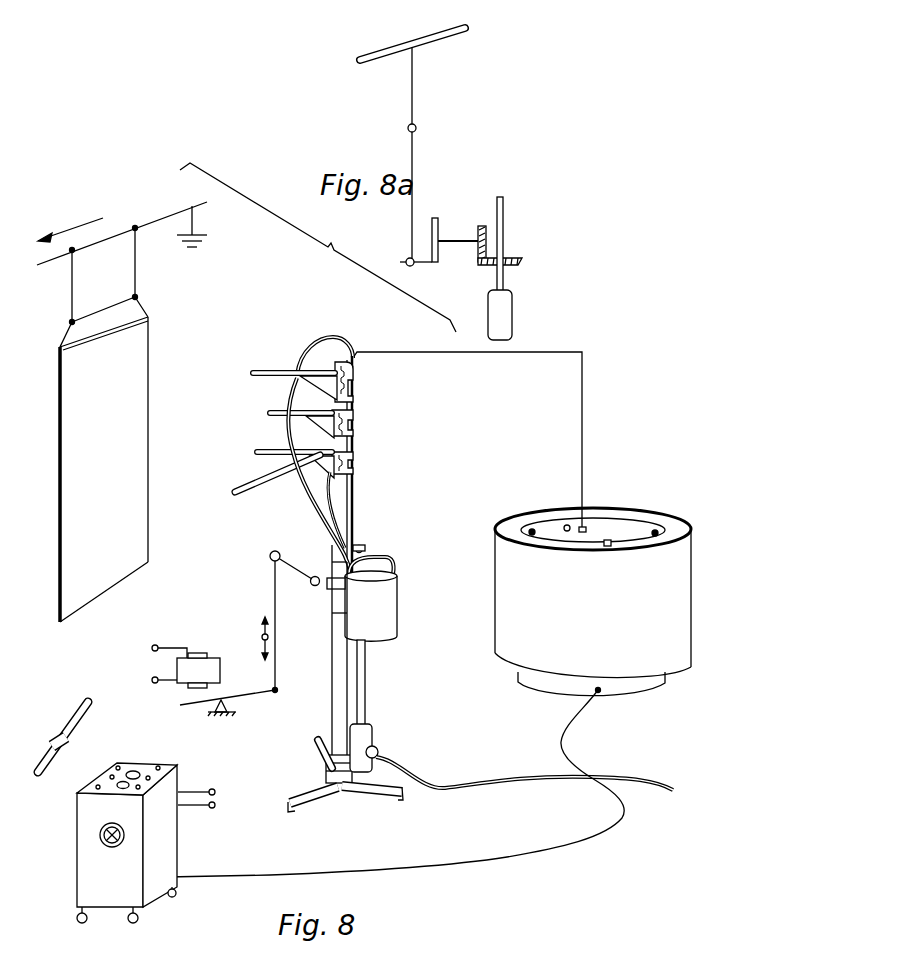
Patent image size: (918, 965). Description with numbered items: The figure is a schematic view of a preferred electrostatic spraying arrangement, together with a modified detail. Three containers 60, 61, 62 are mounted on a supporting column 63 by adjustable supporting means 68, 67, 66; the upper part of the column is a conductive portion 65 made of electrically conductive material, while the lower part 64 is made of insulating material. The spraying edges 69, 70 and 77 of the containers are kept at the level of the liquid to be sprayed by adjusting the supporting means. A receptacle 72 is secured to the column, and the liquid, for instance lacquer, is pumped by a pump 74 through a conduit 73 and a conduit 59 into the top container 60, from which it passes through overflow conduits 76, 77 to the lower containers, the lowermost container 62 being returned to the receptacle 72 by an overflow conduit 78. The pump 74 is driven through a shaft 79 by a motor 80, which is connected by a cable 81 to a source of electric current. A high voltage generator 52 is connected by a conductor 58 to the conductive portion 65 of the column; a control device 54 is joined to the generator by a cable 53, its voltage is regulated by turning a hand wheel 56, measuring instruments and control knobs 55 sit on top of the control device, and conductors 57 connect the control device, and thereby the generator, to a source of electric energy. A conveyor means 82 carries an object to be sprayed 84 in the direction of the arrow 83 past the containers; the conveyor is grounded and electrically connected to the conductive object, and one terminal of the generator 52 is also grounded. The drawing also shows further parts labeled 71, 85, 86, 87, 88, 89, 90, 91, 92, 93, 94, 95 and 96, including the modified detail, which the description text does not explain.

In FIG. 8, the high voltage generator 52 is at (503, 642).
In FIG. 8, the cable 53 is at (508, 857).
In FIG. 8, the control device 54 is at (178, 840).
In FIG. 8, the measuring instruments and control knobs 55 is at (142, 765).
In FIG. 8, the hand wheel 56 is at (100, 836).
In FIG. 8, the conductors 57 is at (215, 803).
In FIG. 8, the conductor 58 is at (584, 392).
In FIG. 8, the conduit 59 is at (335, 323).
In FIG. 8, the top container 60 is at (281, 372).
In FIG. 8, the container 61 is at (274, 414).
In FIG. 8, the container 62 is at (278, 461).
In FIG. 8, the supporting column 63 is at (355, 523).
In FIG. 8, the lower part of supporting column 64 is at (340, 684).
In FIG. 8, the conductive portion of supporting column 65 is at (357, 492).
In FIG. 8, the adjustable supporting means 66 is at (357, 467).
In FIG. 8, the adjustable supporting means 67 is at (357, 427).
In FIG. 8, the adjustable supporting means 68 is at (357, 386).
In FIG. 8, the spraying edge 69 is at (258, 372).
In FIG. 8, the spraying edge 70 is at (289, 417).
In FIG. 8, the wedge 71 is at (300, 450).
In FIG. 8, the receptacle 72 is at (390, 611).
In FIG. 8, the conduit 73 is at (386, 563).
In FIG. 8, the pump 74 is at (366, 547).
In FIG. 8, the overflow conduit 76 is at (292, 392).
In FIG. 8, the overflow conduit 77 is at (312, 428).
In FIG. 8, the overflow conduit 78 is at (308, 512).
In FIG. 8A, the shaft 79 is at (505, 220).
In FIG. 8, the shaft 79 is at (366, 687).
In FIG. 8A, the motor 80 is at (510, 314).
In FIG. 8, the motor 80 is at (373, 739).
In FIG. 8, the cable 81 is at (457, 785).
In FIG. 8, the conveyor means 82 is at (126, 229).
In FIG. 8, the arrow 83 is at (68, 228).
In FIG. 8, the object to be sprayed 84 is at (110, 580).
In FIG. 8A, the handle 85 is at (386, 50).
In FIG. 8, the handle 85 is at (255, 493).
In FIG. 8, the contact 86 is at (261, 639).
In FIG. 8, the link 87 is at (310, 579).
In FIG. 8, the sleeve 88 is at (330, 591).
In FIG. 8, the pivot 89 is at (312, 586).
In FIG. 8, the pivot 90 is at (269, 555).
In FIG. 8, the electrode tool 91 is at (68, 716).
In FIG. 8A, the solenoid 92 is at (487, 264).
In FIG. 8, the solenoid 92 is at (221, 671).
In FIG. 8A, the lever 93 is at (452, 239).
In FIG. 8, the lever 93 is at (258, 699).
In FIG. 8A, the plate 94 is at (436, 220).
In FIG. 8A, the pivot 95 is at (421, 264).
In FIG. 8A, the rod 96 is at (410, 156).